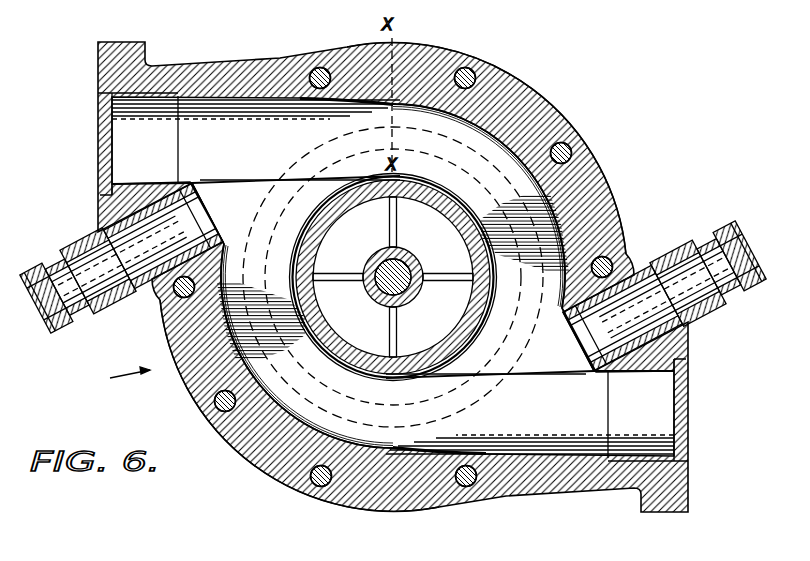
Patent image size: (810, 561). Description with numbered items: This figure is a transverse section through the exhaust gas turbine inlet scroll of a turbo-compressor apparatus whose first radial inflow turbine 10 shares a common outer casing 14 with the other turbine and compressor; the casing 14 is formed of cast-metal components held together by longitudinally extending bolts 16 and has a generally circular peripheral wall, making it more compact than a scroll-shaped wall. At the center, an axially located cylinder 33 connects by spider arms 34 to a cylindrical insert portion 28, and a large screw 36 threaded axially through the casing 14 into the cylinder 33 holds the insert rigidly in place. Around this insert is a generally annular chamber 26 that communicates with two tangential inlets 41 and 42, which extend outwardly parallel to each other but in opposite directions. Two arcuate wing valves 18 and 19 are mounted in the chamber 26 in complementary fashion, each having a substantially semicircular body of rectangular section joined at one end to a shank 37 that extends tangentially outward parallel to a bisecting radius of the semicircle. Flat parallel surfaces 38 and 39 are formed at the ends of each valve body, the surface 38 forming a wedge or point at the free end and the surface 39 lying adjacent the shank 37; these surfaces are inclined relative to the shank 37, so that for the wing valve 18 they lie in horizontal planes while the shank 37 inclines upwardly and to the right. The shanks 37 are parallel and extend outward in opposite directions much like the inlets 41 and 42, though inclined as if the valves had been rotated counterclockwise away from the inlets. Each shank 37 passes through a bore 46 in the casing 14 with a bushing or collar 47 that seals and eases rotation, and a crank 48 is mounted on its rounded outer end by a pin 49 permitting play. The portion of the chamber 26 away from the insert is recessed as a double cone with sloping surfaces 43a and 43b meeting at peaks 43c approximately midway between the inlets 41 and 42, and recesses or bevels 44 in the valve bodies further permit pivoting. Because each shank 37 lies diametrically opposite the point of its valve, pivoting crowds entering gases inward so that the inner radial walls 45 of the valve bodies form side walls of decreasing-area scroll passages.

The first radial inflow turbine 10 is at (114, 377).
The outer casing 14 is at (600, 150).
The bolts 16 is at (322, 68).
The wing valve 18 is at (414, 115).
The wing valve 19 is at (390, 446).
The chamber 26 is at (546, 100).
The cylindrical insert portion 28 is at (488, 240).
The cylinder 33 is at (408, 258).
The spider arms 34 is at (398, 216).
The screw 36 is at (385, 288).
The shank 37 is at (625, 244).
The flat surface 38 is at (320, 178).
The flat surface 39 is at (278, 183).
The tangential inlet 41 is at (672, 440).
The tangential inlet 42 is at (112, 162).
The sloping surface 43a is at (258, 213).
The sloping surface 43b is at (620, 205).
The peaks 43c is at (470, 200).
The recesses 44 is at (468, 143).
The inner radial walls 45 is at (515, 108).
The bore 46 is at (163, 192).
The bushing 47 is at (88, 230).
The crank 48 is at (65, 345).
The pin 49 is at (48, 255).